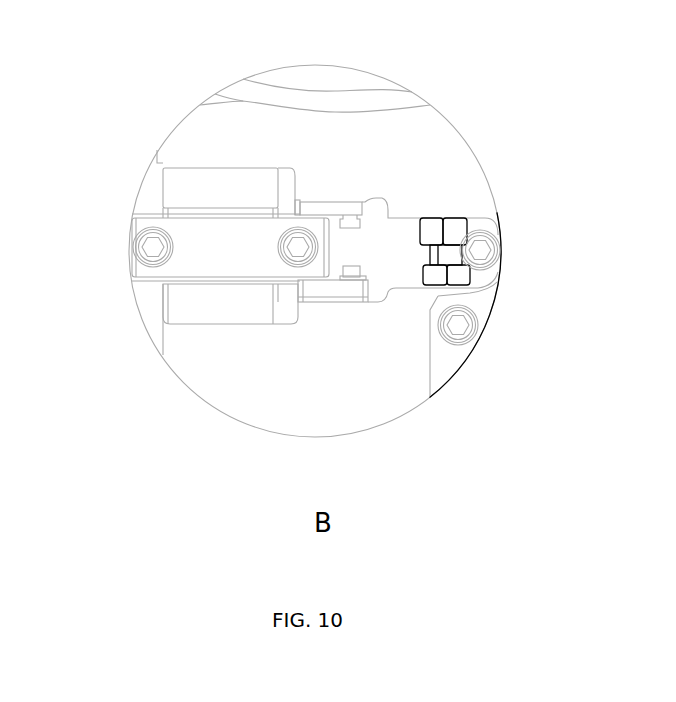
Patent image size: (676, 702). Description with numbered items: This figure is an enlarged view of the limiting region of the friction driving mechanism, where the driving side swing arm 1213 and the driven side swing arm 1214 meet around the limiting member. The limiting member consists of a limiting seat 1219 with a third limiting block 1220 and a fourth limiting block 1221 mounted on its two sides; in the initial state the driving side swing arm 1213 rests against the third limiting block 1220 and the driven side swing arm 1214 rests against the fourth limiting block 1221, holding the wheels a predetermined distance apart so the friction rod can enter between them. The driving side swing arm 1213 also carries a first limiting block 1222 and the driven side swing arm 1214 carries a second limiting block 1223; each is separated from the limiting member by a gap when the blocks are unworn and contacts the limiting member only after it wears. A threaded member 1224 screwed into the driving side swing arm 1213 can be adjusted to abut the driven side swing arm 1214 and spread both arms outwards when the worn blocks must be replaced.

The driving side swing arm 1213 is at (432, 140).
The driven side swing arm 1214 is at (232, 407).
The limiting seat 1219 is at (187, 249).
The third limiting block 1220 is at (175, 185).
The fourth limiting block 1221 is at (173, 302).
The first limiting block 1222 is at (345, 207).
The second limiting block 1223 is at (330, 283).
The threaded member 1224 is at (450, 253).